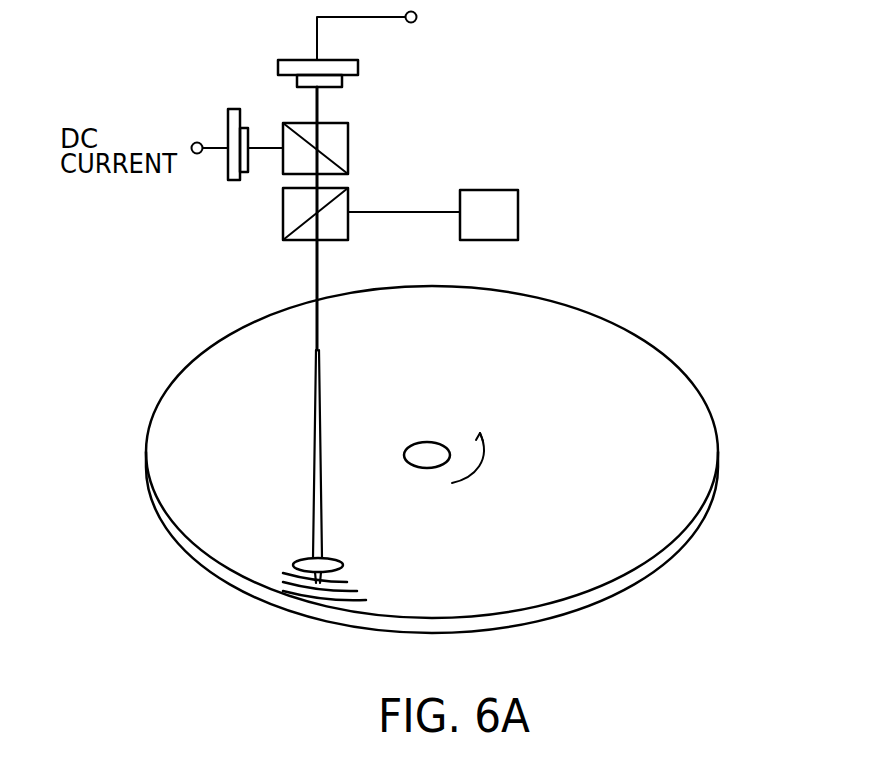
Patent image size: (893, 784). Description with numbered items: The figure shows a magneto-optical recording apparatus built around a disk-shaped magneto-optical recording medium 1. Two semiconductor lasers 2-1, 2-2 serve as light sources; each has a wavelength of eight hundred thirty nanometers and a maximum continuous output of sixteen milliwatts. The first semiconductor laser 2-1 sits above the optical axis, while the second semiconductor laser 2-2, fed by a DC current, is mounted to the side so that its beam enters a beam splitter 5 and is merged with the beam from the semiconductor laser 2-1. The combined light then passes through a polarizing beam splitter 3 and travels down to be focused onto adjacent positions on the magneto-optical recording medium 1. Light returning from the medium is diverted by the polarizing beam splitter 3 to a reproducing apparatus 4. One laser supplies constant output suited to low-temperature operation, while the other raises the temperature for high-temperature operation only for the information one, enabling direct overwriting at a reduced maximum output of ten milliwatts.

The magneto-optical recording medium 1 is at (708, 477).
The semiconductor laser 2-1 is at (360, 70).
The semiconductor laser 2-2 is at (233, 180).
The polarizing beam splitter 3 is at (345, 200).
The reproducing apparatus 4 is at (512, 205).
The beam splitter 5 is at (342, 143).